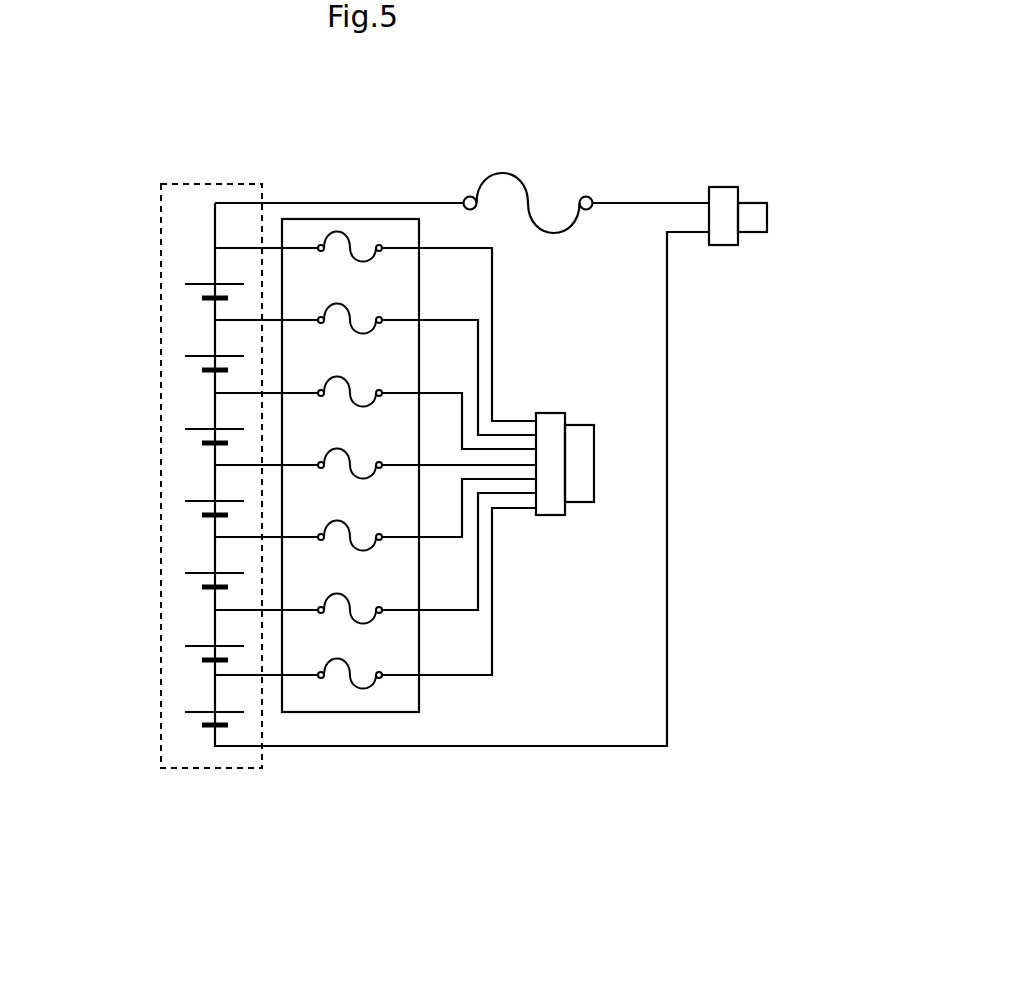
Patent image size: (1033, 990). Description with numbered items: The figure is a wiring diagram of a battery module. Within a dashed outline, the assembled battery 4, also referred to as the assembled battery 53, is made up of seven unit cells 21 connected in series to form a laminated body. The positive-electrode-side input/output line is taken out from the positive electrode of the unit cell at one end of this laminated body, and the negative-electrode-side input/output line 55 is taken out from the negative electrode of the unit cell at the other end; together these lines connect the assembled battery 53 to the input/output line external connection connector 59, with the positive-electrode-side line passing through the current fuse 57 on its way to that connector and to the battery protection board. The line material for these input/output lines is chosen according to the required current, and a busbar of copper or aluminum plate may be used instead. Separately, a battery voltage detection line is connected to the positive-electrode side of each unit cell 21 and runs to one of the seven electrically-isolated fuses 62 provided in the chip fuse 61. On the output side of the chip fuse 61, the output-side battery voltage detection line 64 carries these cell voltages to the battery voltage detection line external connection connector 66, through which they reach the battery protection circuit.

The assembled battery 4 is at (213, 167).
The unit cell 21 is at (188, 297).
The assembled battery 53 is at (172, 785).
The negative-electrode-side input/output line 55 is at (558, 746).
The current fuse 57 is at (512, 162).
The input/output line external connection connector 59 is at (722, 203).
The chip fuse 61 is at (406, 729).
The fuse 62 is at (343, 676).
The output-side battery voltage detection line 64 is at (497, 637).
The battery voltage detection line external connection connector 66 is at (583, 455).